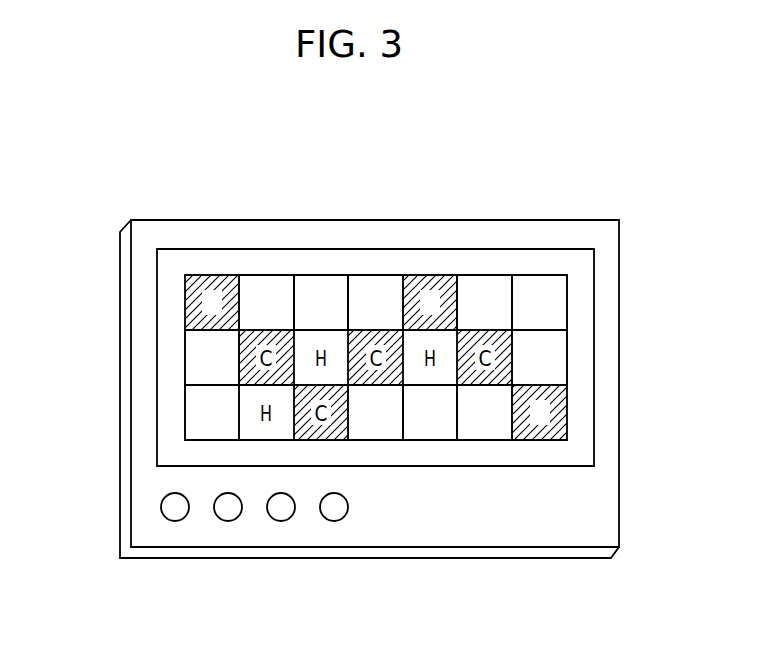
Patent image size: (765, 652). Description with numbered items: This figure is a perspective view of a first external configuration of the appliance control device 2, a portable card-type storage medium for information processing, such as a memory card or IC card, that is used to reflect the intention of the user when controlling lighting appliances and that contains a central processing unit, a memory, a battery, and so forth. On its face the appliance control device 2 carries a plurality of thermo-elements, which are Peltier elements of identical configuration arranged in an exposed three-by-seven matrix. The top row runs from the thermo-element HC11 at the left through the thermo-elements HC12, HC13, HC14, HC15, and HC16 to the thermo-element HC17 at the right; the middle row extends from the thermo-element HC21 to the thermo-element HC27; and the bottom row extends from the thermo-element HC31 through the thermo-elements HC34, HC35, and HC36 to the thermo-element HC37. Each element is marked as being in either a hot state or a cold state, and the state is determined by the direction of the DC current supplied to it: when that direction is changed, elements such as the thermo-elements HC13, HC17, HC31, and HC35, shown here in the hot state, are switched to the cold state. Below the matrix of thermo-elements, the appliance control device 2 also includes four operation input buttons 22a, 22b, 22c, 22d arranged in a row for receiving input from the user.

The appliance control device 2 is at (89, 155).
The thermo-element HC11 is at (192, 302).
The thermo-element HC12 is at (268, 285).
The thermo-element HC13 is at (320, 285).
The thermo-element HC14 is at (378, 285).
The thermo-element HC15 is at (430, 285).
The thermo-element HC16 is at (487, 285).
The thermo-element HC17 is at (556, 302).
The thermo-element HC21 is at (192, 358).
The thermo-element HC27 is at (556, 357).
The thermo-element HC31 is at (192, 413).
The thermo-element HC34 is at (376, 430).
The thermo-element HC35 is at (431, 430).
The thermo-element HC36 is at (485, 430).
The thermo-element HC37 is at (556, 410).
The operation input button 22a is at (175, 513).
The operation input button 22b is at (228, 513).
The operation input button 22c is at (281, 513).
The operation input button 22d is at (334, 513).